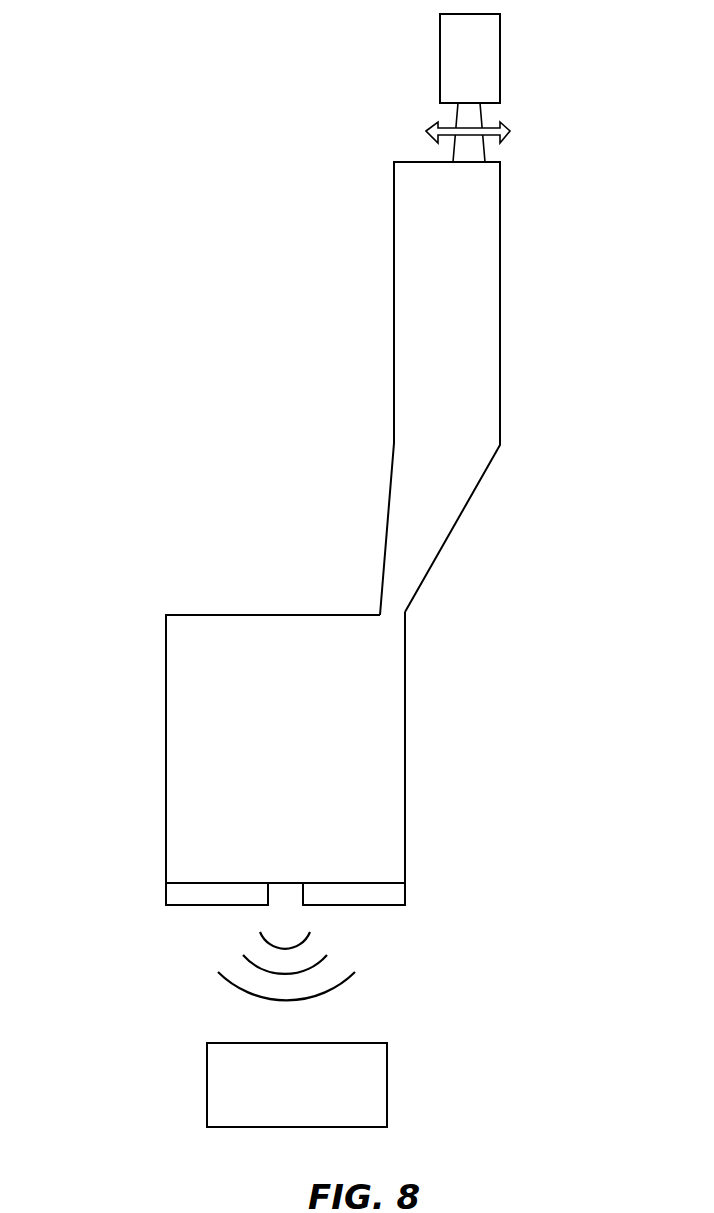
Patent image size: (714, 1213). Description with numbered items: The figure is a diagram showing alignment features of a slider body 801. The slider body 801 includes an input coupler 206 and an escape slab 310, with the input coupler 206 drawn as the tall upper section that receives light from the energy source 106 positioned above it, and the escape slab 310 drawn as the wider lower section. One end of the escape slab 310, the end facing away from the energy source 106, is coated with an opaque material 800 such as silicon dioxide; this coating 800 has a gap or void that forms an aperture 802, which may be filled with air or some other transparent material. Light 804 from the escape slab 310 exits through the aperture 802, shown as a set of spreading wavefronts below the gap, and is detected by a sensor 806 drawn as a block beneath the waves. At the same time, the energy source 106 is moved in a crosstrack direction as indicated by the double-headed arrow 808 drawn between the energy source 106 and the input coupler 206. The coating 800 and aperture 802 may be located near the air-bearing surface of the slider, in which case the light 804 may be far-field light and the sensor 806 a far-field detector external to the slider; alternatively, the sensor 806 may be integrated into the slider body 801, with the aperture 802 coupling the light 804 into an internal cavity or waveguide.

The energy source 106 is at (500, 50).
The arrow 808 is at (510, 131).
The input coupler 206 is at (484, 350).
The slider body 801 is at (183, 232).
The escape slab 310 is at (172, 811).
The opaque material 800 is at (172, 887).
The aperture 802 is at (284, 898).
The light 804 is at (356, 976).
The sensor 806 is at (387, 1077).